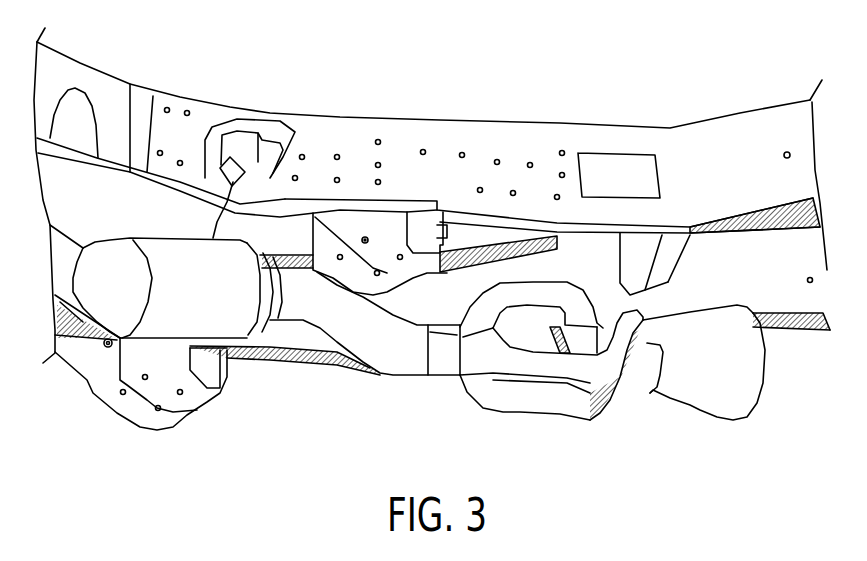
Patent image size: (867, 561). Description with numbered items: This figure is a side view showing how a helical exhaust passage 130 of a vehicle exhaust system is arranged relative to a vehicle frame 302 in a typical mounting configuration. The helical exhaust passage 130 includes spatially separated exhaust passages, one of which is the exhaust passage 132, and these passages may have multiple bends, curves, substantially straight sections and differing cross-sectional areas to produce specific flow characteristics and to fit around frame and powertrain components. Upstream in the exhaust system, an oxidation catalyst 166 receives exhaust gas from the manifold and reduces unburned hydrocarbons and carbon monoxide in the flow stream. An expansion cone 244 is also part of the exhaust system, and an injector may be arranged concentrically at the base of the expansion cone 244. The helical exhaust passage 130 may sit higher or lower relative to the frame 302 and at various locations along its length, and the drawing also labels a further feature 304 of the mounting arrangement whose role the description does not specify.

The helical exhaust passage 130 is at (643, 458).
The exhaust passage 132 is at (545, 330).
The oxidation catalyst 166 is at (271, 112).
The expansion cone 244 is at (695, 412).
The vehicle frame 302 is at (322, 113).
The lower bracket 304 is at (343, 357).